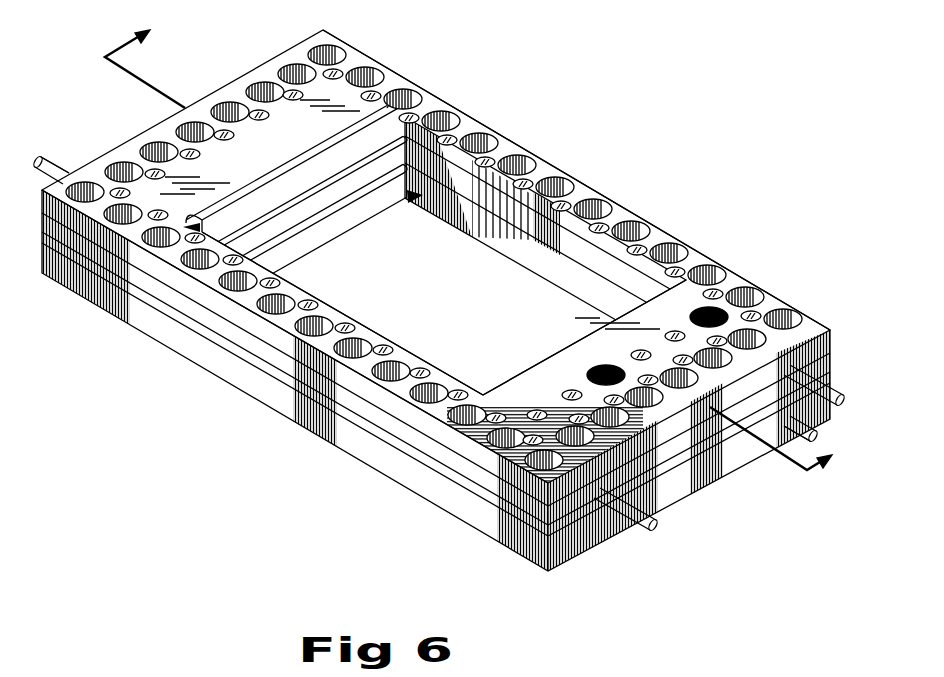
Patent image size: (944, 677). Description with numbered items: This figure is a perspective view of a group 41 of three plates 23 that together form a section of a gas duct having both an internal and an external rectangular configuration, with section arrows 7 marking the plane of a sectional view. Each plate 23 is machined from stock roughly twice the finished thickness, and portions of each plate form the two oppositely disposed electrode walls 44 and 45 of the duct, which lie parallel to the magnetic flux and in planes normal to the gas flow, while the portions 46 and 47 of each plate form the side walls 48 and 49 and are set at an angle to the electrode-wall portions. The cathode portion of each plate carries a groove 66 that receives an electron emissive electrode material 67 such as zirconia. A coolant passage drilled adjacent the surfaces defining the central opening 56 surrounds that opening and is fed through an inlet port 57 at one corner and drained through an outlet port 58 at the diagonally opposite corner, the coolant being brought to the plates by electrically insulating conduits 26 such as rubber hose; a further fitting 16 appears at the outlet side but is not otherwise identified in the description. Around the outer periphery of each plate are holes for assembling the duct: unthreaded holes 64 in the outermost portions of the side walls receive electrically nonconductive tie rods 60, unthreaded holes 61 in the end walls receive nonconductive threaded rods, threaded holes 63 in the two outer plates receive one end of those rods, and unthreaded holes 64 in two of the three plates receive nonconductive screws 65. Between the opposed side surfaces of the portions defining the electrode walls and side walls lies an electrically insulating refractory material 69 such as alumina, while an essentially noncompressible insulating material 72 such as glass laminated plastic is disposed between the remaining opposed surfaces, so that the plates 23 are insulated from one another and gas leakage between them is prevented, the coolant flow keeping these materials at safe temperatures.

The section line 7- 7 is at (475, 237).
The pin 16 is at (833, 413).
The plates 23 is at (158, 323).
The conduits 26 is at (640, 531).
The group of plates 41 is at (268, 418).
The electrode wall 44 is at (388, 218).
The electrode wall 45 is at (547, 358).
The plate portion forming side wall 46 is at (302, 302).
The plate portion forming side wall 47 is at (460, 128).
The side wall 48 is at (397, 345).
The side wall 49 is at (493, 210).
The central opening 56 is at (557, 311).
The inlet port 57 is at (67, 172).
The outlet port 58 is at (797, 347).
The tie rods 60 is at (520, 443).
The unthreaded holes 61 is at (258, 88).
The threaded holes 63 is at (606, 366).
The unthreaded holes 64 is at (398, 89).
The screws 65 is at (195, 150).
The groove 66 is at (215, 207).
The electron emissive electrode material 67 is at (310, 192).
The electrically insulating refractory material 69 is at (471, 224).
The electrically insulating material 72 is at (392, 445).